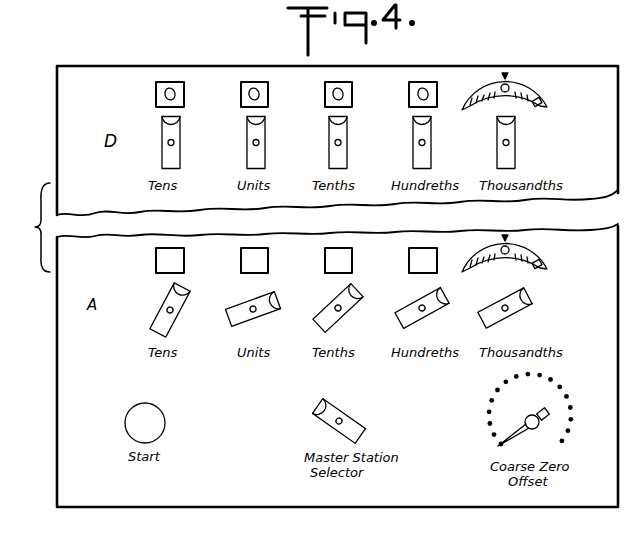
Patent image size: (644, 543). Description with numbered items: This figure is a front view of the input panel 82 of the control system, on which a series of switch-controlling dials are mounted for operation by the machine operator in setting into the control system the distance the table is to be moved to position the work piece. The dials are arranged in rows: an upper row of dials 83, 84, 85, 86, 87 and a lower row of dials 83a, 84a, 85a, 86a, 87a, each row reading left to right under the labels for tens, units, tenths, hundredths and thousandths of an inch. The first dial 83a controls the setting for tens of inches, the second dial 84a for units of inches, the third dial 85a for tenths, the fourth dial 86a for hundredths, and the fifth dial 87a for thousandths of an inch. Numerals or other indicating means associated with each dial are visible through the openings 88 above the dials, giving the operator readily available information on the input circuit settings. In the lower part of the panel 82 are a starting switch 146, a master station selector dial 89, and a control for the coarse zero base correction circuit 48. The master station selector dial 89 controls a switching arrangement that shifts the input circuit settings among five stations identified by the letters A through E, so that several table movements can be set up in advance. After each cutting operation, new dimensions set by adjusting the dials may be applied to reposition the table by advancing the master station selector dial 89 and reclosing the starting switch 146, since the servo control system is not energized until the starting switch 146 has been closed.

The panel 82 is at (70, 487).
The opening 88 is at (156, 98).
The dial 83 is at (162, 152).
The dial 84 is at (247, 164).
The dial 85 is at (329, 150).
The dial 86 is at (413, 150).
The dial 87 is at (497, 150).
The first dial 83a is at (156, 317).
The second dial 84a is at (238, 301).
The third dial 85a is at (324, 306).
The fourth dial 86a is at (410, 306).
The fifth dial 87a is at (494, 306).
The starting switch 146 is at (128, 416).
The master station selector dial 89 is at (363, 428).
The coarse zero base correction circuit 48 is at (547, 419).